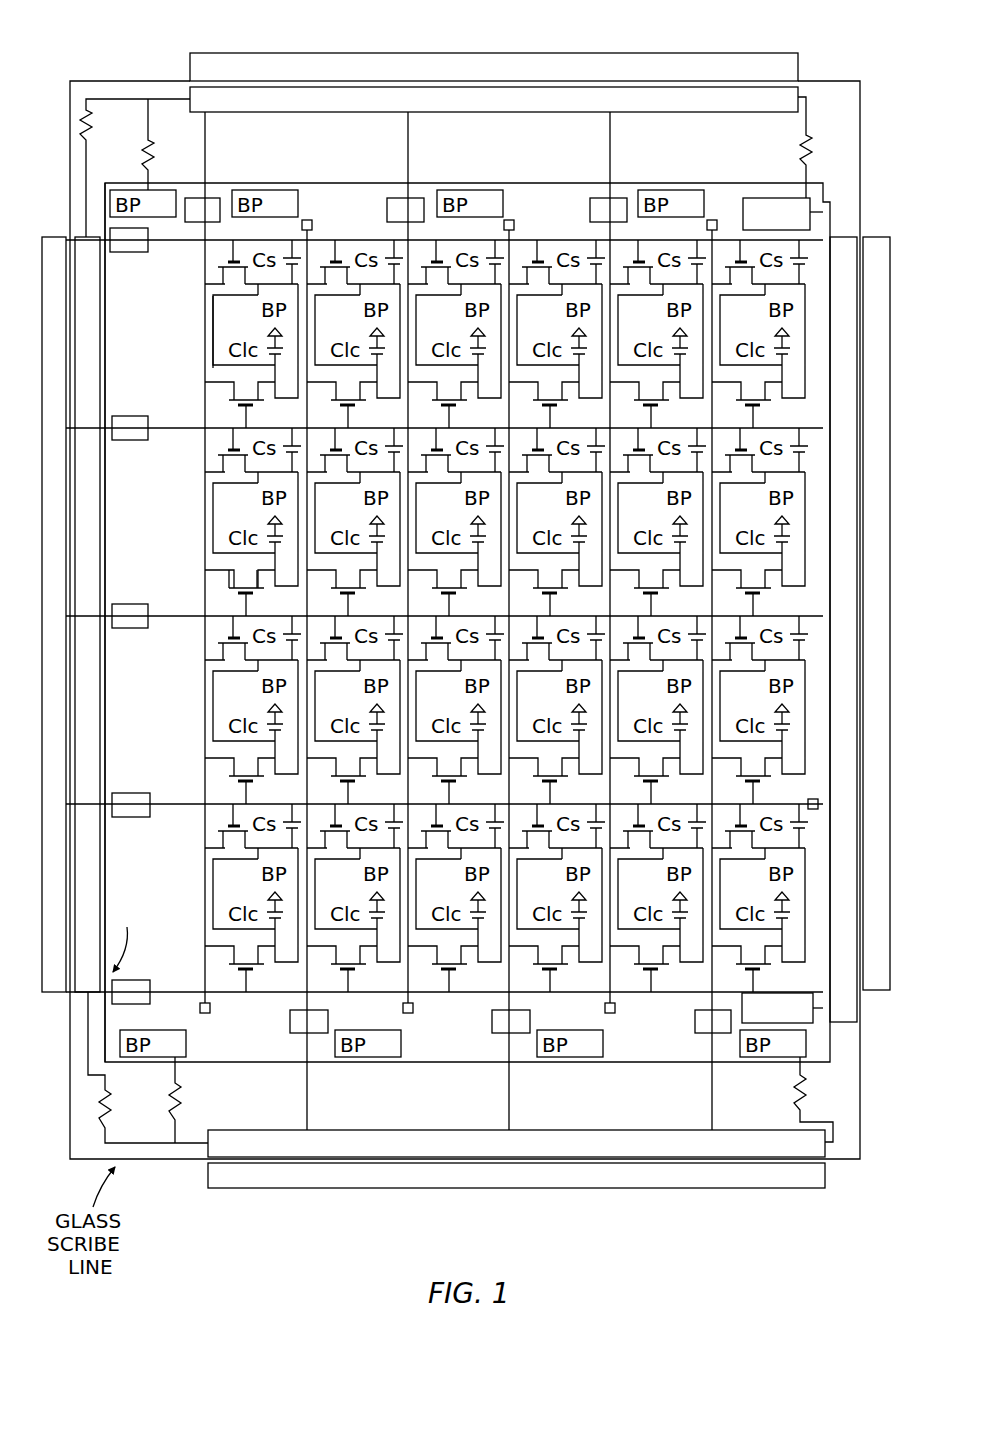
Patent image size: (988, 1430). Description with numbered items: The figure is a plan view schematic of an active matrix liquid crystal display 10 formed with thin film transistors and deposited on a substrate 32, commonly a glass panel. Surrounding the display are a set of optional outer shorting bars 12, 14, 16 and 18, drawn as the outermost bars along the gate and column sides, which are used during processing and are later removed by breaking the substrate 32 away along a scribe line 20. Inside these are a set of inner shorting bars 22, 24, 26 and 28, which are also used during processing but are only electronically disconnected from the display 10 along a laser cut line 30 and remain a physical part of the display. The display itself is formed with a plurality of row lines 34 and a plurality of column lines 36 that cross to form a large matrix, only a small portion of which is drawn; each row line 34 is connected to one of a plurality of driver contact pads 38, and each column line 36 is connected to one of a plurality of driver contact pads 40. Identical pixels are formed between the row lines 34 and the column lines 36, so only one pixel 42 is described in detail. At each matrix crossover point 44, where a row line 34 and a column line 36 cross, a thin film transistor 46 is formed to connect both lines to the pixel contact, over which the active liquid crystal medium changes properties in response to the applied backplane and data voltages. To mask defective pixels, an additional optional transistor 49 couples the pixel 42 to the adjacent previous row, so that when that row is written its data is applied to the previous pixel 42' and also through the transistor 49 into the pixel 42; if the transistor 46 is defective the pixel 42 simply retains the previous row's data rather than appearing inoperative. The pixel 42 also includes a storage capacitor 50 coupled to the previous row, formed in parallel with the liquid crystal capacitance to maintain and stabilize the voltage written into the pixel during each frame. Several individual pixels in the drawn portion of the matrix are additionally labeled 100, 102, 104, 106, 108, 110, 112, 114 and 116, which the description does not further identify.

The active matrix liquid crystal display 10 is at (883, 228).
The outer shorting bar 12 is at (55, 992).
The outer shorting bar 14 is at (718, 58).
The outer shorting bar 16 is at (883, 990).
The outer shorting bar 18 is at (268, 1186).
The scribe line 20 is at (148, 81).
The inner shorting bar 22 is at (103, 855).
The inner shorting bar 24 is at (718, 104).
The inner shorting bar 26 is at (843, 955).
The inner shorting bar 28 is at (628, 1128).
The laser cut line 30 is at (513, 182).
The substrate 32 is at (516, 1158).
The row lines 34 is at (170, 432).
The column lines 36 is at (405, 236).
The driver contact pad 38 is at (128, 415).
The driver contact pad 40 is at (388, 208).
The pixel 42 is at (220, 522).
The previous pixel 42' is at (176, 332).
The matrix crossover point 44 is at (205, 620).
The thin film transistor 46 is at (222, 585).
The optional transistor 49 is at (233, 372).
The storage capacitor 50 is at (300, 428).
The pixel 100 is at (456, 324).
The pixel 102 is at (557, 324).
The pixel 104 is at (658, 324).
The pixel 106 is at (456, 512).
The pixel 108 is at (557, 512).
The pixel 110 is at (658, 512).
The pixel 112 is at (456, 700).
The pixel 114 is at (557, 700).
The pixel 116 is at (658, 700).